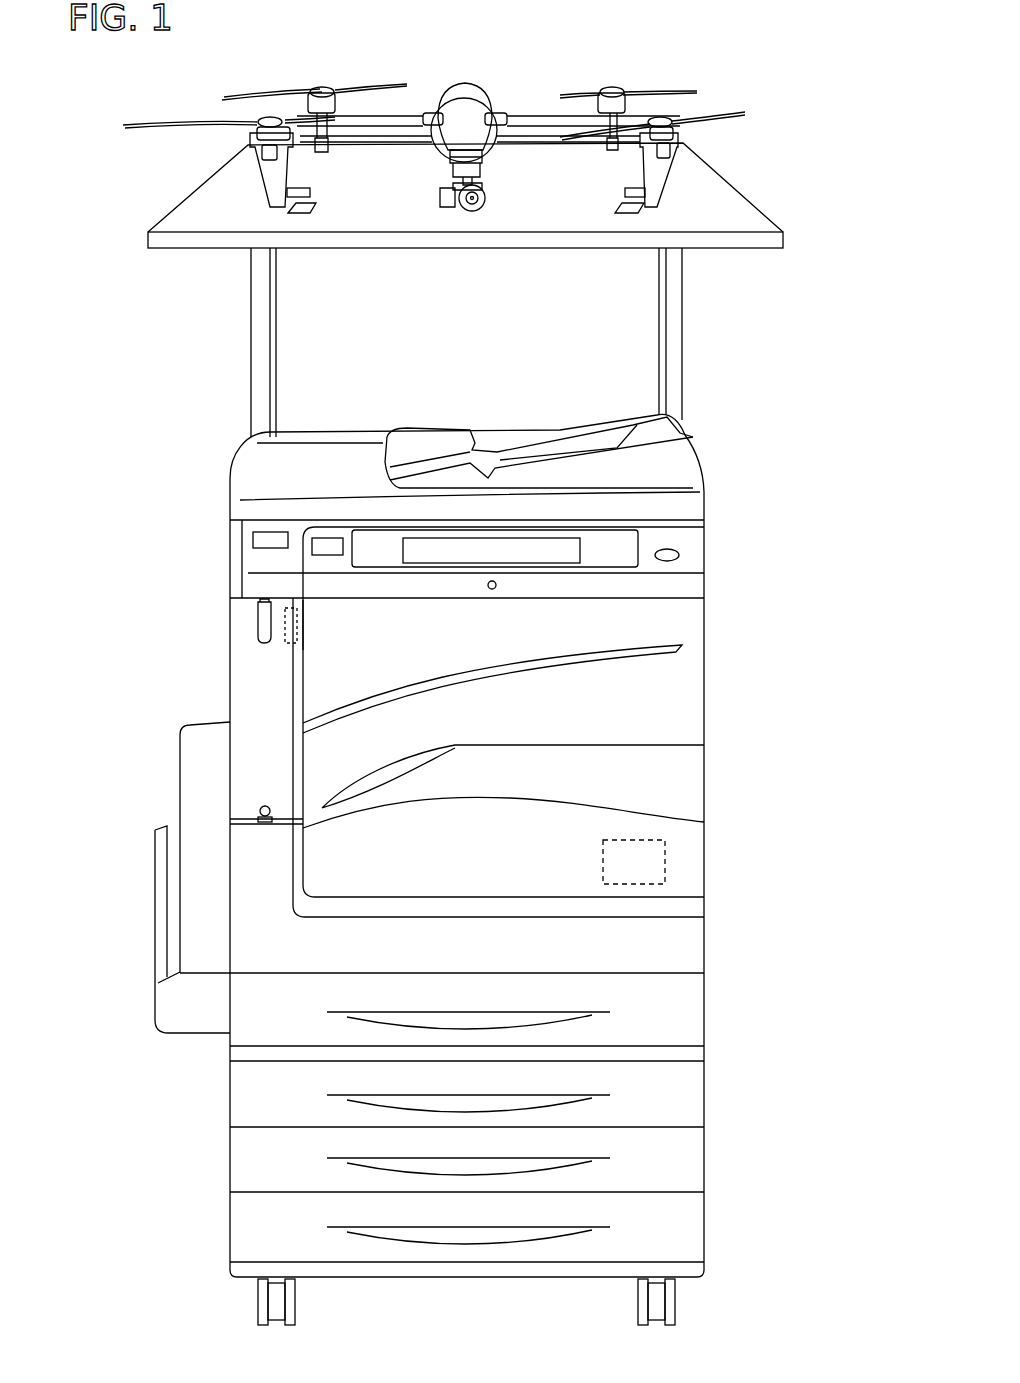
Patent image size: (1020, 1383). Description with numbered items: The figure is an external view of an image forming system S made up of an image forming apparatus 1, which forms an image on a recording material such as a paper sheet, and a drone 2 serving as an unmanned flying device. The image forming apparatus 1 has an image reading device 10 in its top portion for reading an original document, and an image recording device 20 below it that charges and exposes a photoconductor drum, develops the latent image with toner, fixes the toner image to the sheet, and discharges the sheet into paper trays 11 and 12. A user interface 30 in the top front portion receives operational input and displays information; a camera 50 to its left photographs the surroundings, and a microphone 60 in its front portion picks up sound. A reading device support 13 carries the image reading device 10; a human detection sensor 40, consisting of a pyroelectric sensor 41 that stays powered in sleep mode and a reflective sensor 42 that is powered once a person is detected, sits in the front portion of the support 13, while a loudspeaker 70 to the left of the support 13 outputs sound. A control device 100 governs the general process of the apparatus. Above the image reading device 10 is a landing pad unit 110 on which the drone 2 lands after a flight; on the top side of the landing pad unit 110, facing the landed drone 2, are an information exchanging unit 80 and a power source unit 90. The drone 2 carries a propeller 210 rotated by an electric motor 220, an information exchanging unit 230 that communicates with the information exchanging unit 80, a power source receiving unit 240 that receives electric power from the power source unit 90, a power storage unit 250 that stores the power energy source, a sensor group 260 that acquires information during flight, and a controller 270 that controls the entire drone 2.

The image forming system S is at (104, 298).
The image forming apparatus 1 is at (188, 406).
The drone 2 is at (238, 192).
The image reading device 10 is at (210, 498).
The paper tray 11 is at (412, 752).
The paper tray 12 is at (442, 672).
The reading device support 13 is at (305, 625).
The image recording device 20 is at (742, 818).
The user interface 30 is at (597, 568).
The human detection sensor 40 is at (130, 682).
The pyroelectric sensor 41 is at (260, 812).
The reflective sensor 42 is at (260, 636).
The camera 50 is at (253, 540).
The microphone 60 is at (492, 590).
The loudspeaker 70 is at (297, 640).
The information exchanging unit 80 is at (300, 216).
The power source unit 90 is at (632, 216).
The control device 100 is at (668, 866).
The landing pad unit 110 is at (748, 252).
The propeller 210 is at (740, 110).
The electric motor 220 is at (253, 128).
The information exchanging unit 230 is at (308, 192).
The power source receiving unit 240 is at (622, 192).
The power storage unit 250 is at (492, 78).
The sensor group 260 is at (488, 205).
The controller 270 is at (448, 178).